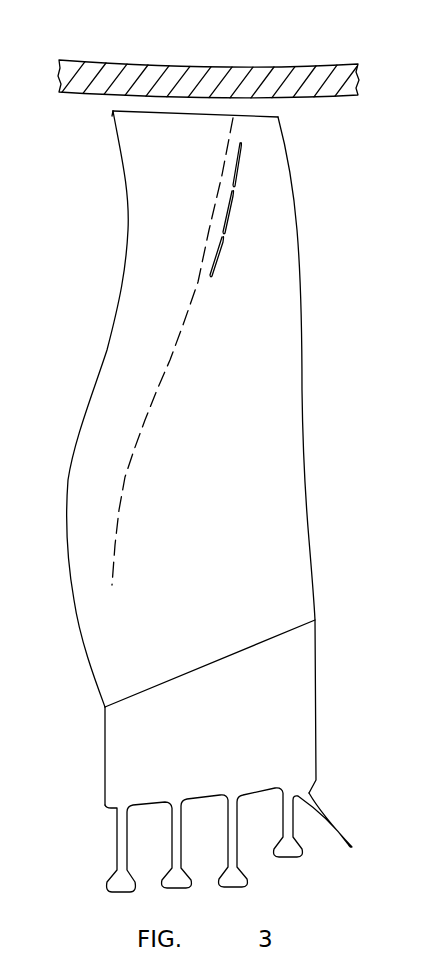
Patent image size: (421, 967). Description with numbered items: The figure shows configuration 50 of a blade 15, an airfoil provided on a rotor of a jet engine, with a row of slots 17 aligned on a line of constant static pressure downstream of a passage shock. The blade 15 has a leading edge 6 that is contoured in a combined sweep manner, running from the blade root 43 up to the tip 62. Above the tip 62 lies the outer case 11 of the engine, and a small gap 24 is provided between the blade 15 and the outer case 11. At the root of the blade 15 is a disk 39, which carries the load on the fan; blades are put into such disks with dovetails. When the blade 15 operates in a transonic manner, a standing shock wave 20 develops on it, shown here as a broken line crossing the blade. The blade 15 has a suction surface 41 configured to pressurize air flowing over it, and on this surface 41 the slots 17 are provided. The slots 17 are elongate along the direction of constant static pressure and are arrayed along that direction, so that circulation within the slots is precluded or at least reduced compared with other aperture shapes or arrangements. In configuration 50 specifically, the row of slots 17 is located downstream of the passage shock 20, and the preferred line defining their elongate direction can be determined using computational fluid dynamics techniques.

The outer case 11 is at (237, 67).
The tip 62 is at (132, 108).
The gap 24 is at (277, 110).
The suction surface 41 is at (158, 200).
The slots 17 is at (218, 257).
The configuration 50 is at (325, 257).
The leading edge 6 is at (123, 297).
The standing shock wave 20 is at (122, 482).
The blade 15 is at (220, 540).
The blade root 43 is at (97, 686).
The disk 39 is at (273, 760).